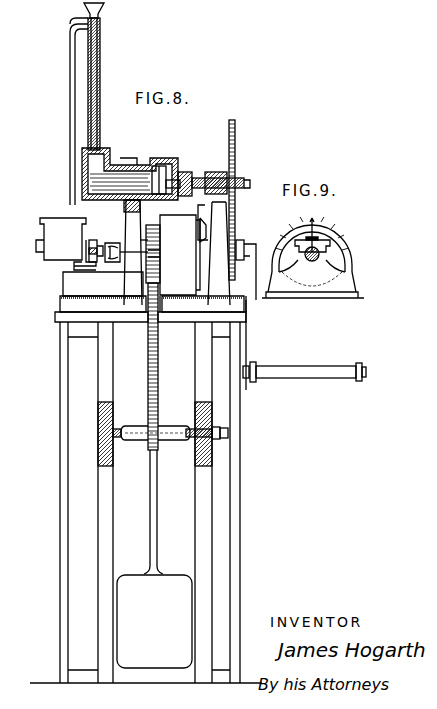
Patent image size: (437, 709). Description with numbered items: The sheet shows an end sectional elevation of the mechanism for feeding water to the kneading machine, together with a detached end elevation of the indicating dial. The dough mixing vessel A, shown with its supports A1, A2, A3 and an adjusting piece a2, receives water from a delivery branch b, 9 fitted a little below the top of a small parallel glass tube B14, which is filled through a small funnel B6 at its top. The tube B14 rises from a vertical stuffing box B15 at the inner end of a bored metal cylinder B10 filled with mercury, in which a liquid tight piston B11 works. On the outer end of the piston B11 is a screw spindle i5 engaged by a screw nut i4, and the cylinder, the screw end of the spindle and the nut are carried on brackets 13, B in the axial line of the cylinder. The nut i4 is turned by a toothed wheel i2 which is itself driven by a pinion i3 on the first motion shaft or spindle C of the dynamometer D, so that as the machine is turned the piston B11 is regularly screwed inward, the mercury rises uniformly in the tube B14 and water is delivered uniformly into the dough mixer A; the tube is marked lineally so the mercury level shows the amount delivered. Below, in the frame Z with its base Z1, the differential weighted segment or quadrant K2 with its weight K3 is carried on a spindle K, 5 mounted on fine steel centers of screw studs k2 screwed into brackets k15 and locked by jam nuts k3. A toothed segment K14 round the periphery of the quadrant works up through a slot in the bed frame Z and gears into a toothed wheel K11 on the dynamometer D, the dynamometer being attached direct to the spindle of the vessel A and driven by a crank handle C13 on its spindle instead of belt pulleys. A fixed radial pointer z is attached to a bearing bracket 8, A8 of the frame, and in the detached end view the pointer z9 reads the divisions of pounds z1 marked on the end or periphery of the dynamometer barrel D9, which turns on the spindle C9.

In FIG. 8, the funnel B6 is at (98, 15).
In FIG. 8, the glass tube B14 is at (100, 80).
In FIG. 8, the delivery branch b is at (72, 48).
In FIG. 8, the delivery branch 9 is at (70, 195).
In FIG. 8, the vertical stuffing box B15 is at (100, 140).
In FIG. 8, the cylinder B10 is at (108, 200).
In FIG. 8, the liquid tight piston B11 is at (158, 166).
In FIG. 8, the screw nut i4 is at (186, 178).
In FIG. 8, the screw spindle i5 is at (242, 182).
In FIG. 8, the toothed wheel i2 is at (235, 130).
In FIG. 8, the pinion i3 is at (240, 240).
In FIG. 8, the brackets 13 is at (136, 252).
In FIG. 8, the brackets B is at (131, 231).
In FIG. 8, the bearing bracket 8 is at (214, 253).
In FIG. 8, the dough mixing vessel A is at (130, 239).
In FIG. 8, the bracket A1 is at (80, 272).
In FIG. 8, the adjusting screw a2 is at (93, 240).
In FIG. 8, the spindle C is at (186, 247).
In FIG. 8, the pedestal A2 is at (103, 284).
In FIG. 8, the base plate A3 is at (150, 310).
In FIG. 8, the dynamometer D is at (174, 255).
In FIG. 8, the fixed radial pointer z is at (203, 220).
In FIG. 8, the toothed wheel K11 is at (160, 262).
In FIG. 8, the toothed segment K14 is at (158, 338).
In FIG. 8, the frame Z is at (68, 346).
In FIG. 8, the base Z1 is at (262, 662).
In FIG. 8, the brackets k15 is at (113, 415).
In FIG. 8, the spindle K is at (170, 426).
In FIG. 8, the spindle 5 is at (176, 409).
In FIG. 8, the screw studs k2 is at (118, 440).
In FIG. 8, the jam nuts k3 is at (218, 440).
In FIG. 8, the differential weighted segment K2 is at (157, 505).
In FIG. 8, the weight K3 is at (154, 621).
In FIG. 8, the crank handle C13 is at (270, 364).
In FIG. 9, the divisions of pounds z1 is at (318, 241).
In FIG. 9, the fixed radial pointer z9 is at (313, 222).
In FIG. 9, the dynamometer barrel D9 is at (335, 248).
In FIG. 9, the spindle C9 is at (312, 261).
In FIG. 9, the bearing bracket A8 is at (313, 279).